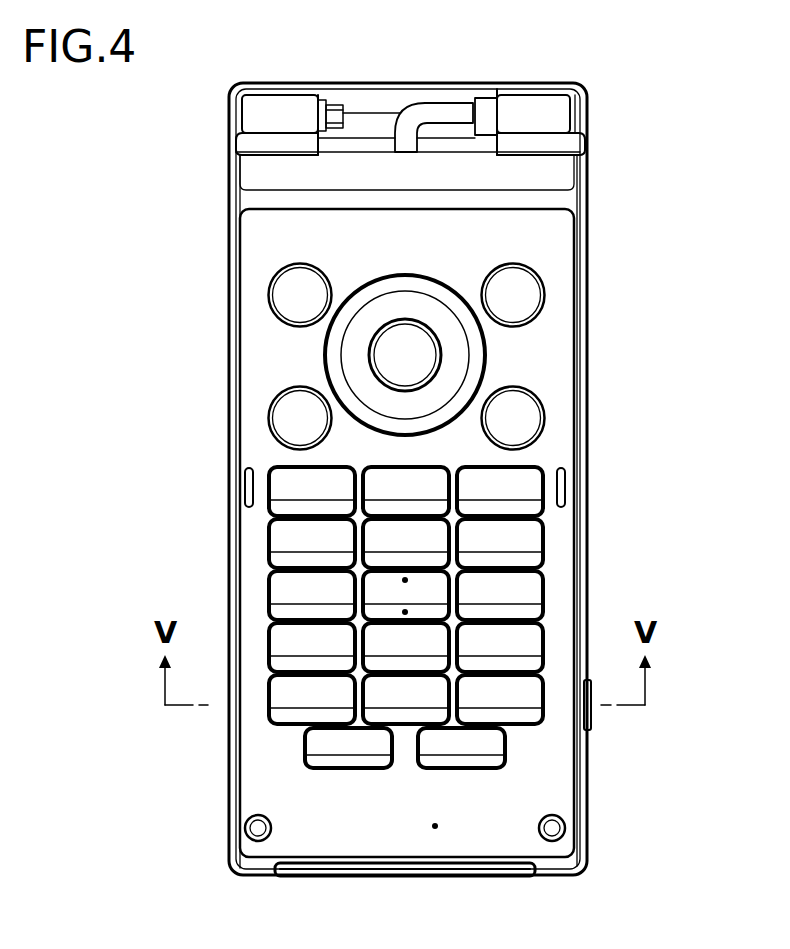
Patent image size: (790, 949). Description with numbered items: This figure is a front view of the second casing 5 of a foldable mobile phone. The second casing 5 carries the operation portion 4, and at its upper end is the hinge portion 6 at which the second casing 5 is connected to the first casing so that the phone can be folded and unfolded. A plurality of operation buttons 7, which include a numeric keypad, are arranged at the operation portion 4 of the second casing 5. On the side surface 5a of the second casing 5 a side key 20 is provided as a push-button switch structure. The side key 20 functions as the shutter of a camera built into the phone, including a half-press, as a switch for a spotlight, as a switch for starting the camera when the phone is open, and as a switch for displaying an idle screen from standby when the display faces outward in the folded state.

The operation portion 4 is at (530, 362).
The second casing 5 is at (188, 275).
The side surface of housing 5a is at (580, 547).
The hinge portion 6 is at (594, 119).
The operation buttons 7 is at (290, 640).
The side key 20 is at (590, 719).